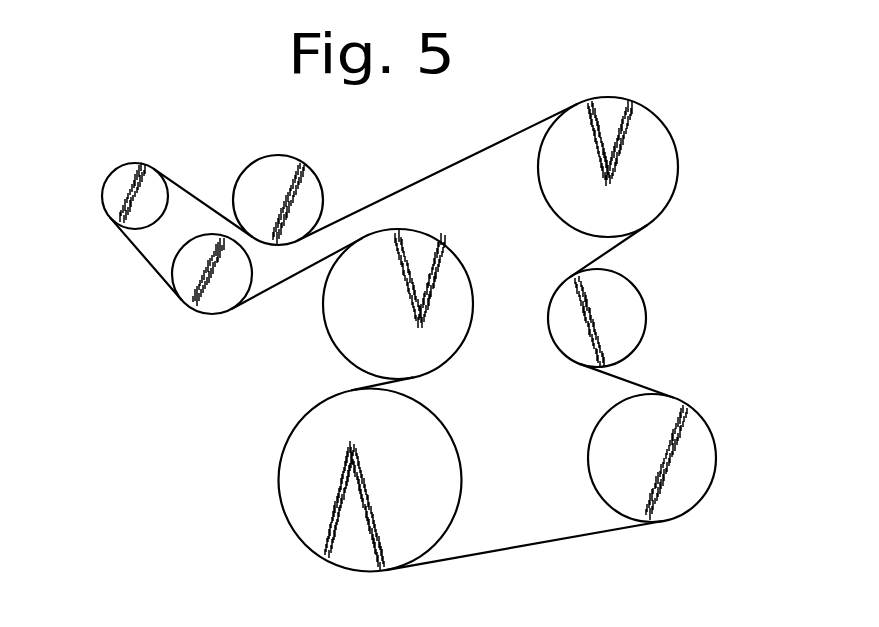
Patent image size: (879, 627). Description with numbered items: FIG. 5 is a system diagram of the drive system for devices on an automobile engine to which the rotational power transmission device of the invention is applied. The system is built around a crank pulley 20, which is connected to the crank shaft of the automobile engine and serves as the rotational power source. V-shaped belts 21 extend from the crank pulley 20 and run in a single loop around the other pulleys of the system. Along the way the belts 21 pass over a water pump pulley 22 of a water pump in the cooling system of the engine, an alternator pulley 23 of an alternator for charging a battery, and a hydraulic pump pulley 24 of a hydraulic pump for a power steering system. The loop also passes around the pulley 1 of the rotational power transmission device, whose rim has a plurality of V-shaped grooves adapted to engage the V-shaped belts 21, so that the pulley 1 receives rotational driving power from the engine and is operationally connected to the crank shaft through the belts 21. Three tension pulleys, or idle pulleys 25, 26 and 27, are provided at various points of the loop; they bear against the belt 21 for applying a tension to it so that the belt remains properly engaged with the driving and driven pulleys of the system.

The pulley 1 is at (702, 458).
The crank pulley 20 is at (290, 482).
The V-shaped belts 21 is at (573, 535).
The water pump pulley 22 is at (338, 332).
The alternator pulley 23 is at (117, 181).
The hydraulic pump pulley 24 is at (667, 168).
The tension pulley 25 is at (188, 290).
The tension pulley 26 is at (270, 165).
The tension pulley 27 is at (635, 317).